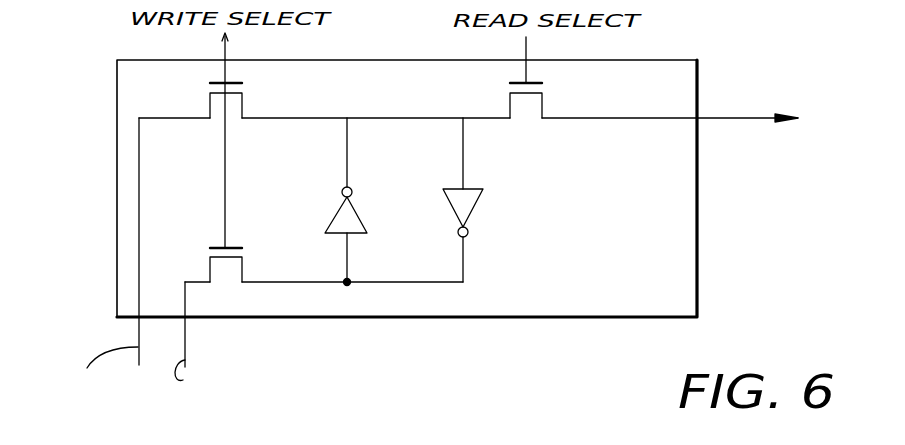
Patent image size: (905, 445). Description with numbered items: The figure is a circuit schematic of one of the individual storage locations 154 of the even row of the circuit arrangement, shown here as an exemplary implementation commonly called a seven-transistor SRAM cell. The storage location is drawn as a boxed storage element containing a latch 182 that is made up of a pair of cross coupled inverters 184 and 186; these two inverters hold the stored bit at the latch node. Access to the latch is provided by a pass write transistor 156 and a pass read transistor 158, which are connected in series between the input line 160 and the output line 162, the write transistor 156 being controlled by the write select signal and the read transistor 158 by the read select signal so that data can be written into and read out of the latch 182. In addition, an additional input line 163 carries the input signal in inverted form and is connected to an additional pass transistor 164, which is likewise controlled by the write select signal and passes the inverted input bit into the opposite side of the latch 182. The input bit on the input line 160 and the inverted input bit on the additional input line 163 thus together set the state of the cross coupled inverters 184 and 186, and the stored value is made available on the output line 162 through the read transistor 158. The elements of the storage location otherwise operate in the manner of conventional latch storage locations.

The storage location 154 is at (687, 309).
The pass write transistor 156 is at (243, 98).
The pass read transistor 158 is at (543, 105).
The input line 160 is at (137, 332).
The output line 162 is at (722, 119).
The additional input line 163 is at (187, 333).
The additional pass transistor 164 is at (243, 265).
The latch 182 is at (389, 288).
The inverter 184 is at (360, 218).
The inverter 186 is at (468, 212).